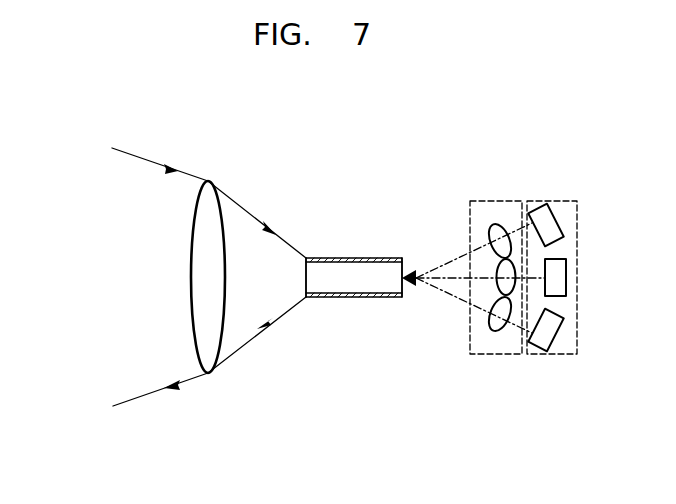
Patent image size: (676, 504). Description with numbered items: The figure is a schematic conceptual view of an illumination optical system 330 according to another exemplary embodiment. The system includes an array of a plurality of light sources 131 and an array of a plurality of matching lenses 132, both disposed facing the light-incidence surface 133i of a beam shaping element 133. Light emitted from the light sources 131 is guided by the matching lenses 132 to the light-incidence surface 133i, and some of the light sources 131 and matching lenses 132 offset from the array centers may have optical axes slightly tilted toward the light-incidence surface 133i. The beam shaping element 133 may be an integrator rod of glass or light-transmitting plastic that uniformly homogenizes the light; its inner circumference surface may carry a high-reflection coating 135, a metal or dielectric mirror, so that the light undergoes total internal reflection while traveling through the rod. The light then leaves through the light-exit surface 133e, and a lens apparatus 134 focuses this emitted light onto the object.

The illumination optical system 330 is at (423, 141).
The lens apparatus 134 is at (208, 180).
The beam shaping element 133 is at (363, 268).
The light-exit surface 133e is at (306, 260).
The light-incidence surface 133i is at (402, 258).
The high-reflection coating 135 is at (363, 298).
The matching lens 132 is at (494, 200).
The light source 131 is at (557, 200).